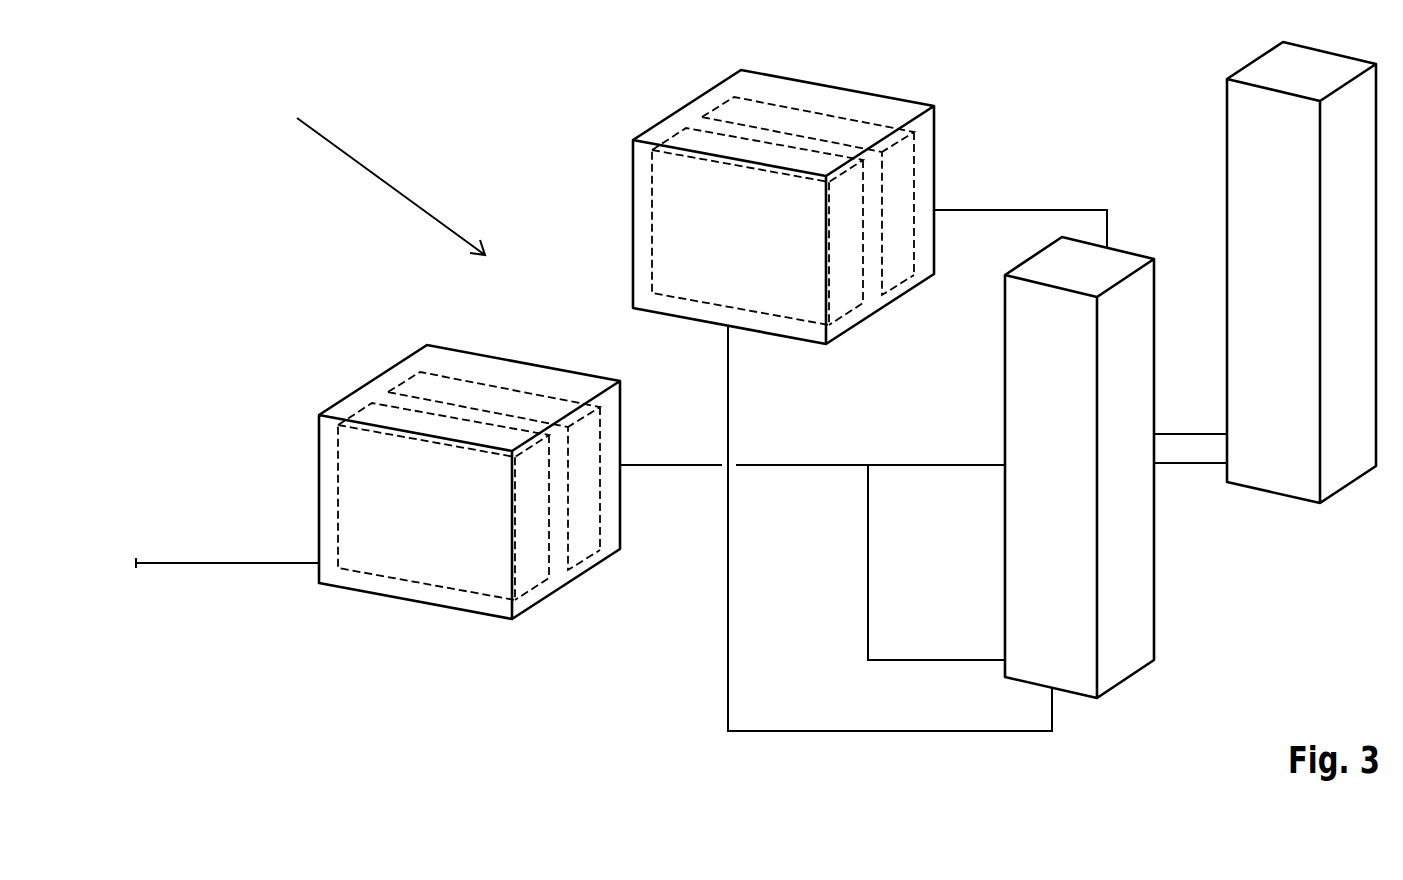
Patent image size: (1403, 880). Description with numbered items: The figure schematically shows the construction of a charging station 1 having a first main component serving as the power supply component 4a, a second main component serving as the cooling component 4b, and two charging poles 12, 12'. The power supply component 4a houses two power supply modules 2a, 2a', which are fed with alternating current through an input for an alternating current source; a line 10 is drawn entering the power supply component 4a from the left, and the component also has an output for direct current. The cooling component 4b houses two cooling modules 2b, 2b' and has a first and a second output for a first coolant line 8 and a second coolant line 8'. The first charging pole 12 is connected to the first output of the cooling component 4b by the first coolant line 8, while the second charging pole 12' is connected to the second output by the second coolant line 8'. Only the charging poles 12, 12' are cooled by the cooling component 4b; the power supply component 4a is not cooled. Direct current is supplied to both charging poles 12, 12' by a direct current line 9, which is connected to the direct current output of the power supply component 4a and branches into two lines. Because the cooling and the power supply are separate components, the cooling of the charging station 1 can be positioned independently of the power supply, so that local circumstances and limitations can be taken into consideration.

The charging station 1 is at (373, 166).
The power supply module 2a is at (443, 538).
The power supply module 2a' is at (496, 508).
The cooling module 2b is at (716, 226).
The cooling module 2b' is at (808, 160).
The power supply component 4a is at (390, 598).
The cooling component 4b is at (863, 88).
The first coolant line 8 is at (890, 569).
The second coolant line 8' is at (1020, 188).
The direct current line 9 is at (690, 467).
The supply line 10 is at (272, 567).
The first charging pole 12 is at (1079, 504).
The second charging pole 12' is at (1265, 307).